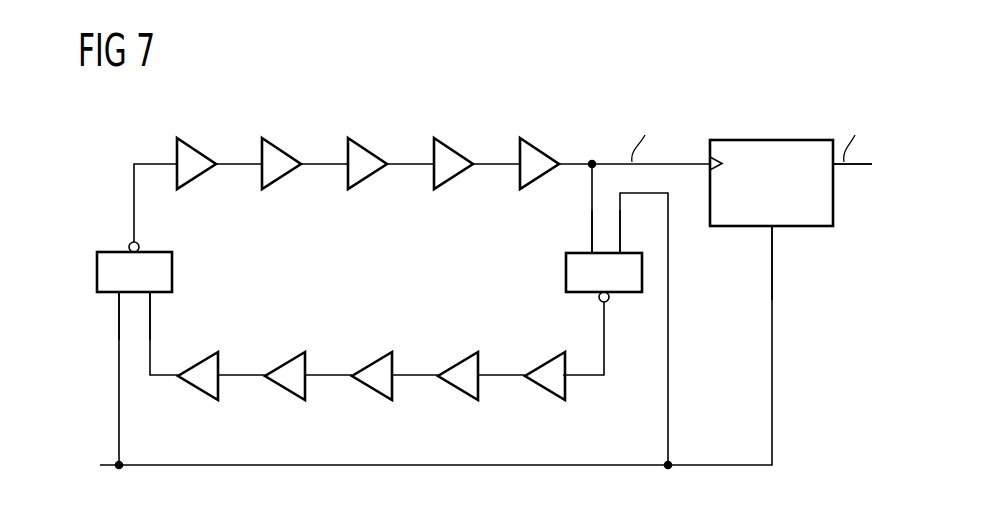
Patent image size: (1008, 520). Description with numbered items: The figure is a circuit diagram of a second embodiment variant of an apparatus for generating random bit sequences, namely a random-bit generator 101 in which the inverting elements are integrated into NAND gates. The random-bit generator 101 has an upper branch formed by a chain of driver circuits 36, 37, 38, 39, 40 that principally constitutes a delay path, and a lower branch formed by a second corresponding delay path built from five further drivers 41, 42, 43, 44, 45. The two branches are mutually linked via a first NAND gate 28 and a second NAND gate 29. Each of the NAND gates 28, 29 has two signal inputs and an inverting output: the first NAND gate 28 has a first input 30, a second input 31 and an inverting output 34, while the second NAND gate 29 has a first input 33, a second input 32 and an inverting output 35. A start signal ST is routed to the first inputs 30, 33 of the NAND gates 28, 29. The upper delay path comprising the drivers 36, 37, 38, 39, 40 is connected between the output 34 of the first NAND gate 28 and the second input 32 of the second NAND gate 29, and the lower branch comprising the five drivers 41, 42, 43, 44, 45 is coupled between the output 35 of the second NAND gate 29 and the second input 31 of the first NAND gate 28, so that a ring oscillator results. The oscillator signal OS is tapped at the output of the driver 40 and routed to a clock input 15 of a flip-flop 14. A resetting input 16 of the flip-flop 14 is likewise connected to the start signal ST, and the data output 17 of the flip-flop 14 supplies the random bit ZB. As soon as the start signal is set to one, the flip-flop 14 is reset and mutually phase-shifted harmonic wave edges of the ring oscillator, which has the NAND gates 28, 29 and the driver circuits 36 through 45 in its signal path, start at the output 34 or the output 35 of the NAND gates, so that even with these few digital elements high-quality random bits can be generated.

The random-bit generator 101 is at (264, 78).
The flip-flop 14 is at (773, 140).
The clock input 15 is at (708, 162).
The resetting input 16 is at (774, 228).
The data output 17 is at (836, 166).
The first NAND gate 28 is at (174, 272).
The second NAND gate 29 is at (565, 271).
The first input of first NAND gate 30 is at (117, 294).
The second input of first NAND gate 31 is at (152, 294).
The second input of second NAND gate 32 is at (588, 253).
The first input of second NAND gate 33 is at (622, 252).
The inverting output of first NAND gate 34 is at (130, 243).
The inverting output of second NAND gate 35 is at (601, 302).
The driver circuit 36 is at (196, 150).
The driver circuit 37 is at (281, 150).
The driver circuit 38 is at (369, 152).
The driver circuit 39 is at (455, 152).
The driver circuit 40 is at (541, 152).
The driver 41 is at (545, 390).
The driver 42 is at (458, 390).
The driver 43 is at (372, 390).
The driver 44 is at (285, 390).
The driver 45 is at (198, 390).